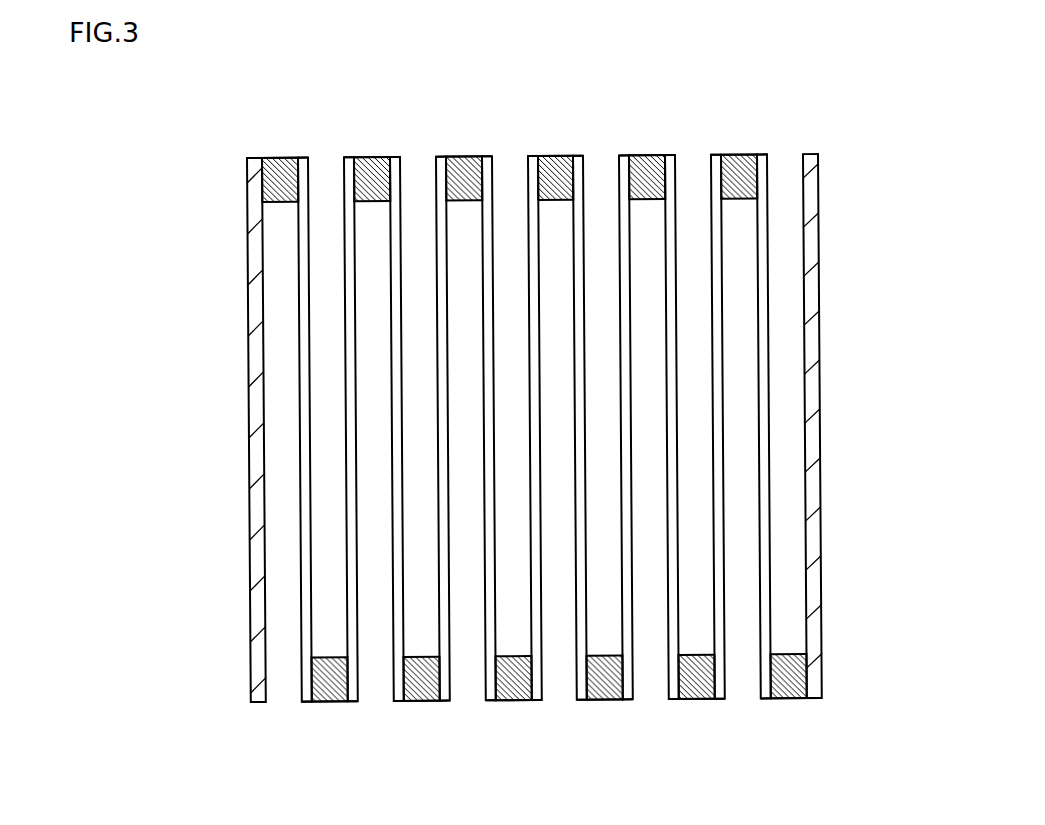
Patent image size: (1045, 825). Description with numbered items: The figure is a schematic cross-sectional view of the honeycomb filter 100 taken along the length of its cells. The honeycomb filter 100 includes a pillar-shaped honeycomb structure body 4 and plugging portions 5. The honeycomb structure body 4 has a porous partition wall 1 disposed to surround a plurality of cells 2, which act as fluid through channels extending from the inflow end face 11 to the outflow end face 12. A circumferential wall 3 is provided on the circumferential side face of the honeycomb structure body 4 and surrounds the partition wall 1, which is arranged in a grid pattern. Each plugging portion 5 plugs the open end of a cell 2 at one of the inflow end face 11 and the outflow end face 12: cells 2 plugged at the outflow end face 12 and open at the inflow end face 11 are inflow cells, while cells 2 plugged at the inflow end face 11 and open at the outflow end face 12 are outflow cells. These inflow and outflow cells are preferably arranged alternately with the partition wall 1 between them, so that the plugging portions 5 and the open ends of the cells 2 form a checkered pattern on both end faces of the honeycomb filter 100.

The partition wall 1 is at (670, 187).
The cells 2 is at (597, 227).
The circumferential wall 3 is at (250, 332).
The honeycomb structure body 4 is at (827, 161).
The plugging portion 5 is at (463, 180).
The inflow end face 11 is at (270, 139).
The outflow end face 12 is at (289, 720).
The honeycomb filter 100 is at (905, 62).